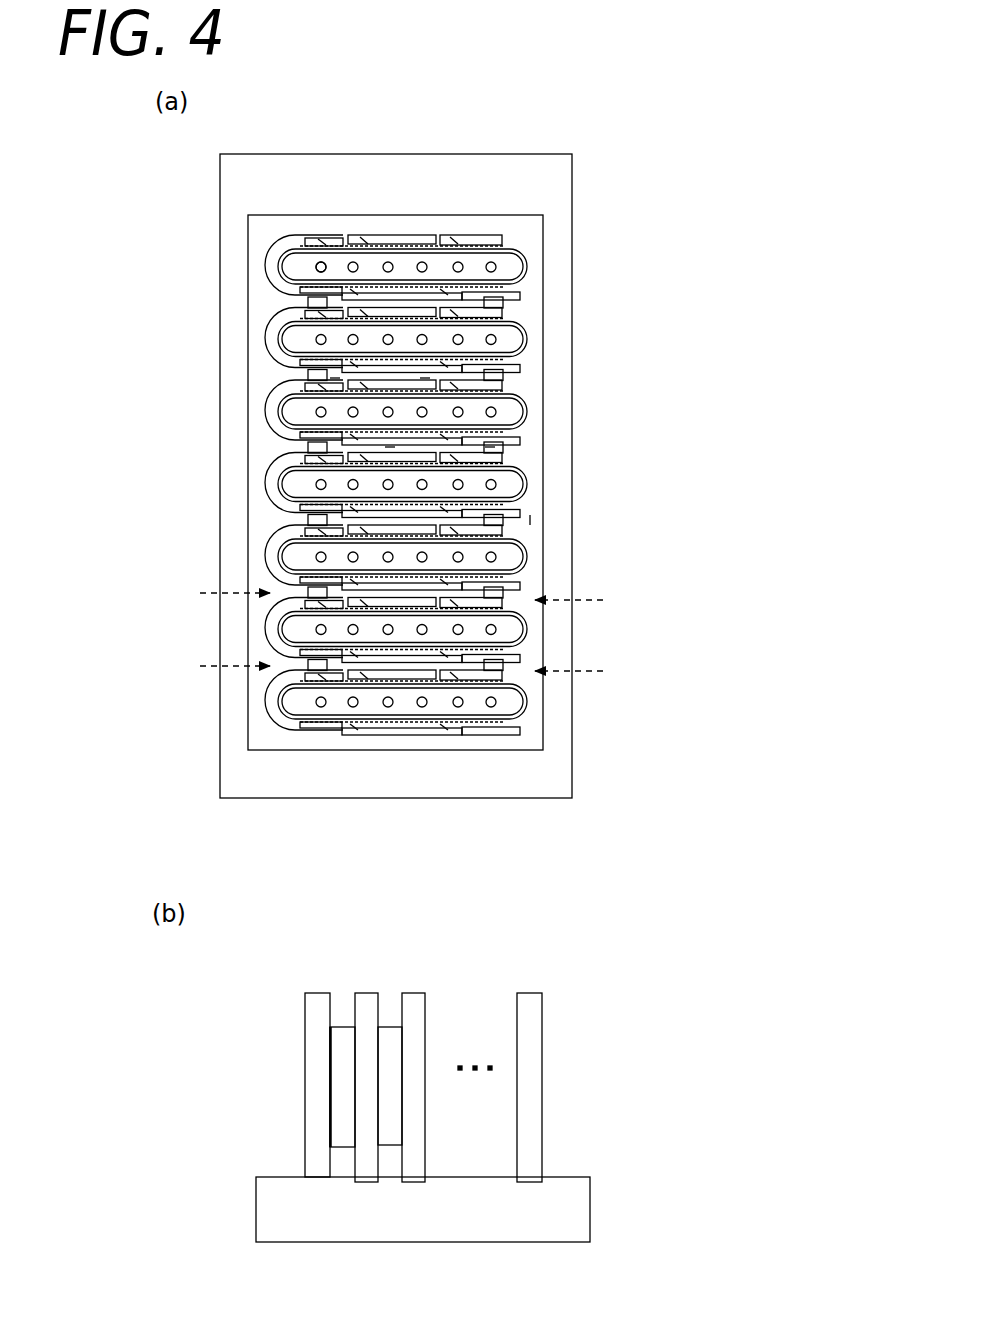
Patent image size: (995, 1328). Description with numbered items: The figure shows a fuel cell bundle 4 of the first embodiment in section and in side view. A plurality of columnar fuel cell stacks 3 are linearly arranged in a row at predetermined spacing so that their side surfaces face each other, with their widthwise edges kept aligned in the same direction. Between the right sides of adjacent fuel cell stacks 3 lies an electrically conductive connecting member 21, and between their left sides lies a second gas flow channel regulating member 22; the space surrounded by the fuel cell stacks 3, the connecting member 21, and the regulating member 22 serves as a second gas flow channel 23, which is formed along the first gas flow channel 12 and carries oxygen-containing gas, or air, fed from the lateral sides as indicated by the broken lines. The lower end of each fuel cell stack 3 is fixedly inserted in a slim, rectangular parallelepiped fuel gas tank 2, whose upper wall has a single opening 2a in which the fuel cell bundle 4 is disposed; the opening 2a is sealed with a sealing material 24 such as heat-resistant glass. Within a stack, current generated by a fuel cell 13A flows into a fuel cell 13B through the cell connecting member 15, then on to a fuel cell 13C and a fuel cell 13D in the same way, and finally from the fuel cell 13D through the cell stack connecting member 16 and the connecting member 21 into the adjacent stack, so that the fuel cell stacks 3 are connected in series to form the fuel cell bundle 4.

The fuel gas tank 2 is at (530, 175).
The opening 2a is at (538, 562).
The fuel cell stack 3 is at (265, 524).
The fuel cell bundle 4 is at (415, 645).
The first gas flow channel 12 is at (322, 258).
The fuel cell 13A is at (494, 446).
The fuel cell 13B is at (384, 444).
The fuel cell 13C is at (326, 374).
The fuel cell 13D is at (429, 377).
The cell connecting member 15 is at (273, 408).
The cell stack connecting member 16 is at (507, 381).
The connecting member 21 is at (507, 377).
The second gas flow channel regulating member 22 is at (310, 377).
The second gas flow channel 23 is at (507, 302).
The sealing material 24 is at (535, 520).